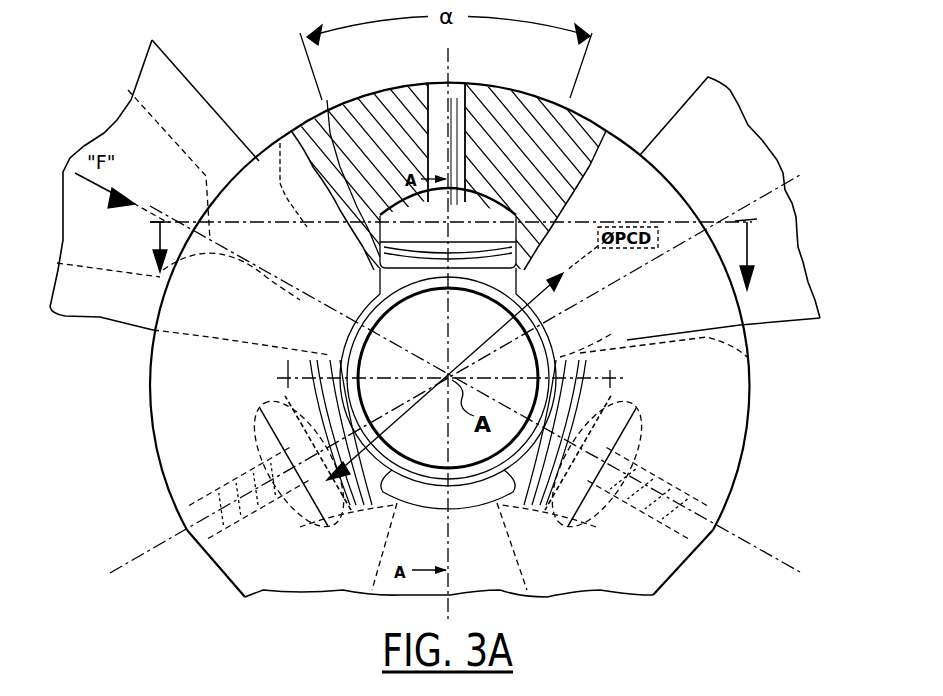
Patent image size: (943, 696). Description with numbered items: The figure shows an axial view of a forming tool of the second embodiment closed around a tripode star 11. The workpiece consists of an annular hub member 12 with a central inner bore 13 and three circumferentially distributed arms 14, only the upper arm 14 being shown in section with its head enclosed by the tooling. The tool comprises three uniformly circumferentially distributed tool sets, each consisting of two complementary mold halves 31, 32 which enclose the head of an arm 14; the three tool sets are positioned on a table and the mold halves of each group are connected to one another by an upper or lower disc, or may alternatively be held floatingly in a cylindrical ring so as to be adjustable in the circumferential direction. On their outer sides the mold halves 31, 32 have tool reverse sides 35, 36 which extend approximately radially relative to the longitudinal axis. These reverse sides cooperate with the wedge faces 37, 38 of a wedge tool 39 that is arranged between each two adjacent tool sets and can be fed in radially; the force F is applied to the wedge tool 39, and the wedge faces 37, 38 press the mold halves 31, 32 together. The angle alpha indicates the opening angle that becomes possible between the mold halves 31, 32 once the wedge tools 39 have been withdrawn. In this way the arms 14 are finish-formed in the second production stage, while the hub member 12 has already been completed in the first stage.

The tripode star 11 is at (603, 333).
The annular hub member 12 is at (357, 397).
The inner bore 13 is at (363, 346).
The arms 14 is at (455, 96).
The mold half 31 is at (390, 106).
The mold half 32 is at (512, 106).
The tool reverse side 35 is at (318, 233).
The tool reverse side 36 is at (205, 337).
The wedge face 37 is at (213, 106).
The wedge face 38 is at (87, 320).
The wedge tool 39 is at (213, 143).